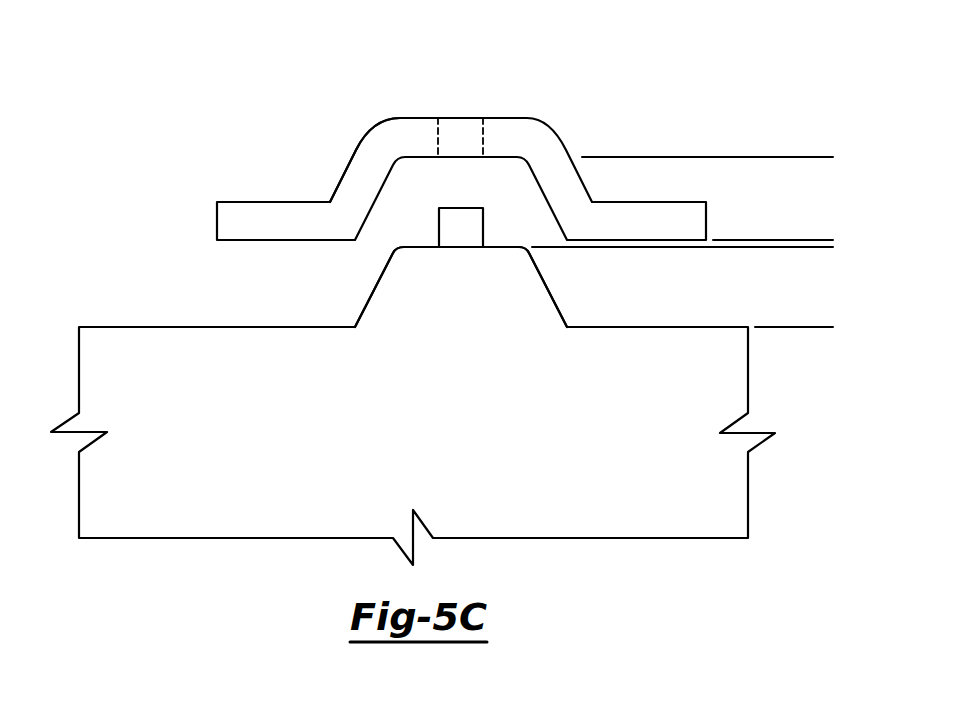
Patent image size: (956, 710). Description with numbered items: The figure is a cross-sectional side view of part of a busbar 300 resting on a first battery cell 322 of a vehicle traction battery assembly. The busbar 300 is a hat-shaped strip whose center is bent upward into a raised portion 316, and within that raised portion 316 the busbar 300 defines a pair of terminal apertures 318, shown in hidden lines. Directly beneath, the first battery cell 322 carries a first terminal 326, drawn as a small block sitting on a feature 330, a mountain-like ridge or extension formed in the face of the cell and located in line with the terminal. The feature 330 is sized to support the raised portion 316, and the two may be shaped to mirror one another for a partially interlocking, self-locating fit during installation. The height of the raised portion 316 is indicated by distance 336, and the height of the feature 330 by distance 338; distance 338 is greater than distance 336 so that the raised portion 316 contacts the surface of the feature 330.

The busbar 300 is at (535, 119).
The raised portion 316 is at (347, 163).
The terminal apertures 318 is at (483, 137).
The first battery cell 322 is at (722, 383).
The first terminal 326 is at (460, 227).
The feature 330 is at (403, 287).
The distance 336 is at (795, 157).
The distance 338 is at (795, 247).